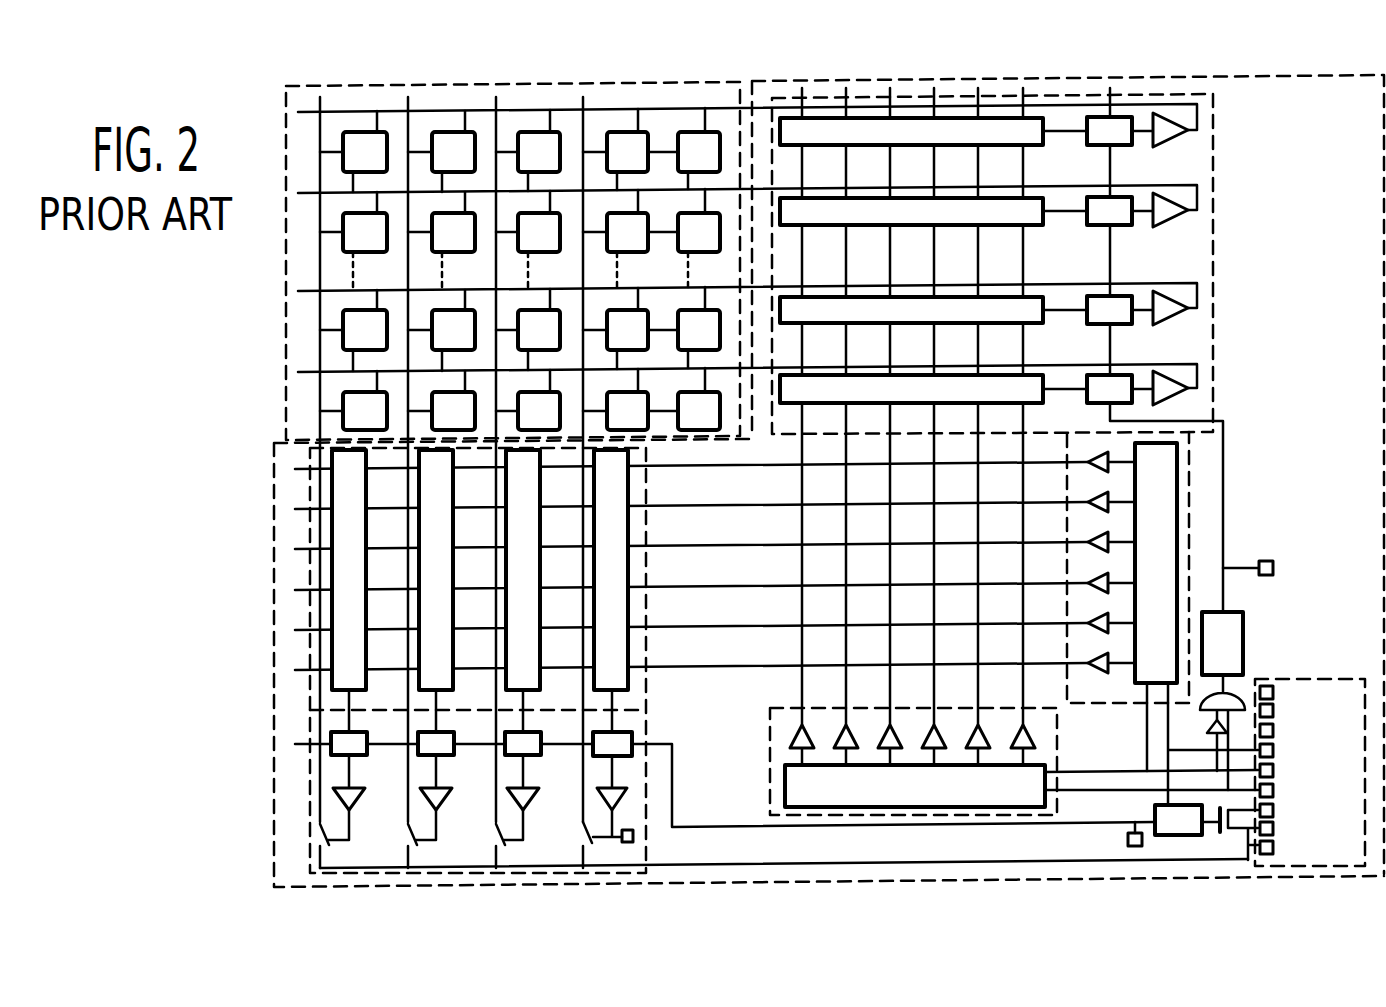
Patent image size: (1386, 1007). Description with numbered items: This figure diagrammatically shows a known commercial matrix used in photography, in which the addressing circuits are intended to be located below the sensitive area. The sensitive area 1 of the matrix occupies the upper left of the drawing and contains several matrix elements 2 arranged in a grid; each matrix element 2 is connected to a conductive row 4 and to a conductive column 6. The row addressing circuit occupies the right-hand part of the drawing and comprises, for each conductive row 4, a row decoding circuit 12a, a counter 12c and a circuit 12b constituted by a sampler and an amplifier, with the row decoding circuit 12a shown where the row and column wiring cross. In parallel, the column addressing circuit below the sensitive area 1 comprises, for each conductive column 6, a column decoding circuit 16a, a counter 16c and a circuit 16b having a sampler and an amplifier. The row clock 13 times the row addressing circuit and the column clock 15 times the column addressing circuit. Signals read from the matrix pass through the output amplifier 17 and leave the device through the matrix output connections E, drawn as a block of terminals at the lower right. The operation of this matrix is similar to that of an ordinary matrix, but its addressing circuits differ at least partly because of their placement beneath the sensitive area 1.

The sensitive area 1 is at (288, 380).
The matrix element 2 is at (455, 147).
The conductive row 4 is at (318, 196).
The conductive column 6 is at (405, 101).
The row decoding circuit 12a is at (780, 433).
The circuit constituted by a sampler and an amplifier 12b is at (1214, 249).
The counter 12c is at (1189, 463).
The row clock 13 is at (1245, 645).
The column clock 15 is at (1172, 835).
The column decoding circuit 16a is at (309, 561).
The circuit having a sampler and an amplifier 16b is at (309, 791).
The counter 16c is at (769, 757).
The output amplifier 17 is at (1225, 833).
The matrix output connections E is at (1323, 685).